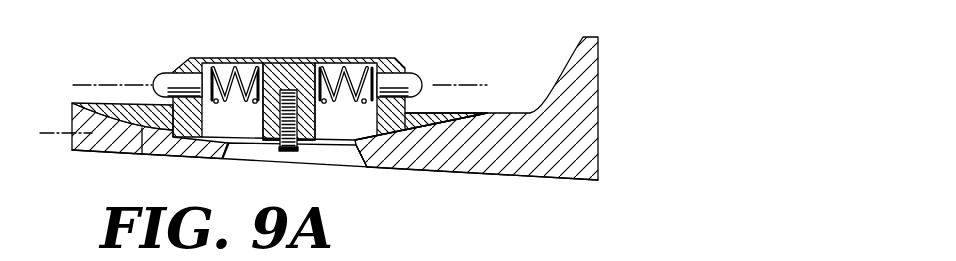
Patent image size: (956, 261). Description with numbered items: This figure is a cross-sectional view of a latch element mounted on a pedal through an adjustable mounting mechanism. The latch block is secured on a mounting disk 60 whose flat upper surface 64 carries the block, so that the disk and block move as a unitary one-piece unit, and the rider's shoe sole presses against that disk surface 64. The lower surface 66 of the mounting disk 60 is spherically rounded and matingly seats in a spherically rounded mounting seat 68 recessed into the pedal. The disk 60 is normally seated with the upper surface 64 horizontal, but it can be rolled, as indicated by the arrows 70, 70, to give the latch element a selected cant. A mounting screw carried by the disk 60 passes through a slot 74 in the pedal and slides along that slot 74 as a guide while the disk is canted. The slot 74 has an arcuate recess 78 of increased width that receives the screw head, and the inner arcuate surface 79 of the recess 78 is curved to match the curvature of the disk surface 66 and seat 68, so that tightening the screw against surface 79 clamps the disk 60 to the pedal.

The lower surface of the mounting disk 66 is at (141, 152).
The mounting seat 68 is at (191, 148).
The flat upper surface 64 is at (417, 137).
The slot 74 is at (318, 148).
The inner arcuate surface 79 is at (246, 153).
The arcuate recess 78 is at (337, 157).
The mounting disk 60 is at (466, 112).
The arrows 70 is at (143, 45).